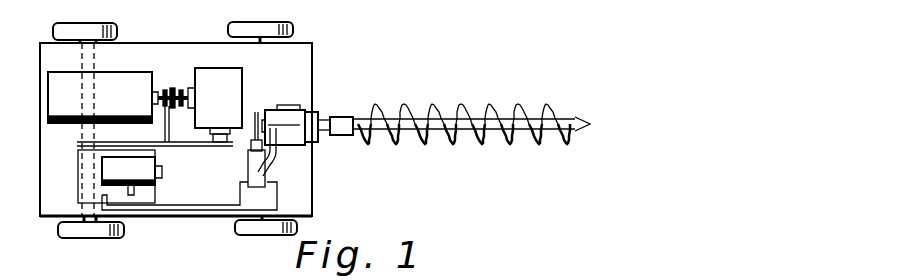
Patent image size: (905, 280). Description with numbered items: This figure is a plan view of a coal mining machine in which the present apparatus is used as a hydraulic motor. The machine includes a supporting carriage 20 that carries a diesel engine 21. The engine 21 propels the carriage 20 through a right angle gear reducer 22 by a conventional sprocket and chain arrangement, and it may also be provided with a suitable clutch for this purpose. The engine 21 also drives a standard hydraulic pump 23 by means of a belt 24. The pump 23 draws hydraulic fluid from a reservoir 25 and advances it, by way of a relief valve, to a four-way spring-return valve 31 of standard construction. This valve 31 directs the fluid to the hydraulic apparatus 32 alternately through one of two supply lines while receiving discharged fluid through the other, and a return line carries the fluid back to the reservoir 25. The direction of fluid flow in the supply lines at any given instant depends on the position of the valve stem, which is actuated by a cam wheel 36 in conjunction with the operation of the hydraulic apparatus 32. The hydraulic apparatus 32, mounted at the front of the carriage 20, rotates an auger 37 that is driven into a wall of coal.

The supporting carriage 20 is at (312, 192).
The diesel engine 21 is at (140, 80).
The right angle gear reducer 22 is at (213, 75).
The hydraulic pump 23 is at (152, 180).
The belt 24 is at (173, 115).
The reservoir 25 is at (78, 168).
The four-way spring-return valve 31 is at (248, 166).
The hydraulic apparatus 32 is at (292, 118).
The cam wheel 36 is at (256, 125).
The auger 37 is at (522, 132).